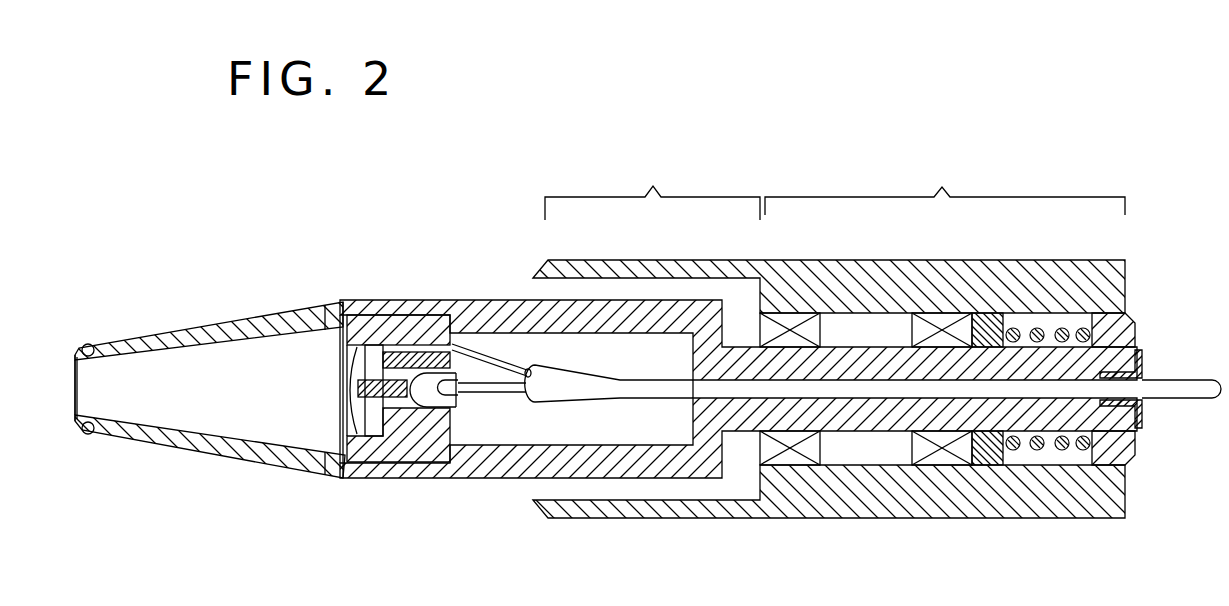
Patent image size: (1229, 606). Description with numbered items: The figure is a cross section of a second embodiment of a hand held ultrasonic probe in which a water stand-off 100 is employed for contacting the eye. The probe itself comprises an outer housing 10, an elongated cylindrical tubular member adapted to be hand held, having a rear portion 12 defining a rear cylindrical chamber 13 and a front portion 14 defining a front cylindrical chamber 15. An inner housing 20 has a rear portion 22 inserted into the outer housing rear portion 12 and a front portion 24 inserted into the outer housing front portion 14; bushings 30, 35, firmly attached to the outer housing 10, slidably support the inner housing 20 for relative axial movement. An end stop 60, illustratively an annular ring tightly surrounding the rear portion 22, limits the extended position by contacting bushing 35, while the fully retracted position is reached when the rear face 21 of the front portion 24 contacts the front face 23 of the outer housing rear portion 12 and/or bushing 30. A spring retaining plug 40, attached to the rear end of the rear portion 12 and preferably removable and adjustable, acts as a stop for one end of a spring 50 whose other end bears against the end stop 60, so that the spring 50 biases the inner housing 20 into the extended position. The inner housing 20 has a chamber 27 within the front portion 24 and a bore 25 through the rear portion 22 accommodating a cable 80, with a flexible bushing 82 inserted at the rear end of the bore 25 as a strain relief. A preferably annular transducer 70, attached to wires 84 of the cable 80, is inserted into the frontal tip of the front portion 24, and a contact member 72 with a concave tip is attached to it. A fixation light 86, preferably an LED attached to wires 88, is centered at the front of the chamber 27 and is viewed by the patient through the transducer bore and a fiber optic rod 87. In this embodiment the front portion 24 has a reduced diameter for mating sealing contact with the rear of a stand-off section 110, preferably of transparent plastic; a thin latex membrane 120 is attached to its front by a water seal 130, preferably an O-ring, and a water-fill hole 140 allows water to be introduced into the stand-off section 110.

The water stand-off 100 is at (90, 273).
The outer housing 10 is at (888, 493).
The rear portion 12 is at (945, 187).
The rear cylindrical chamber 13 is at (822, 344).
The front portion 14 is at (652, 190).
The front cylindrical chamber 15 is at (724, 326).
The inner housing 20 is at (507, 473).
The rear face 21 is at (725, 472).
The rear portion 22 is at (940, 355).
The front face 23 is at (756, 482).
The front portion 24 is at (498, 315).
The bore 25 is at (690, 401).
The chamber 27 is at (556, 431).
The bushing 30 is at (790, 330).
The bushing 35 is at (912, 333).
The spring retaining plug 40 is at (1127, 335).
The spring 50 is at (1063, 327).
The end stop 60 is at (993, 335).
The transducer 70 is at (372, 355).
The contact member 72 is at (355, 355).
The cable 80 is at (553, 380).
The flexible bushing 82 is at (1146, 366).
The wires 84 is at (488, 360).
The fixation light 86 is at (448, 400).
The fiber optic rod 87 is at (368, 392).
The wires 88 is at (505, 393).
The stand-off section 110 is at (238, 330).
The membrane 120 is at (77, 406).
The water seal 130 is at (93, 344).
The water-fill hole 140 is at (333, 310).